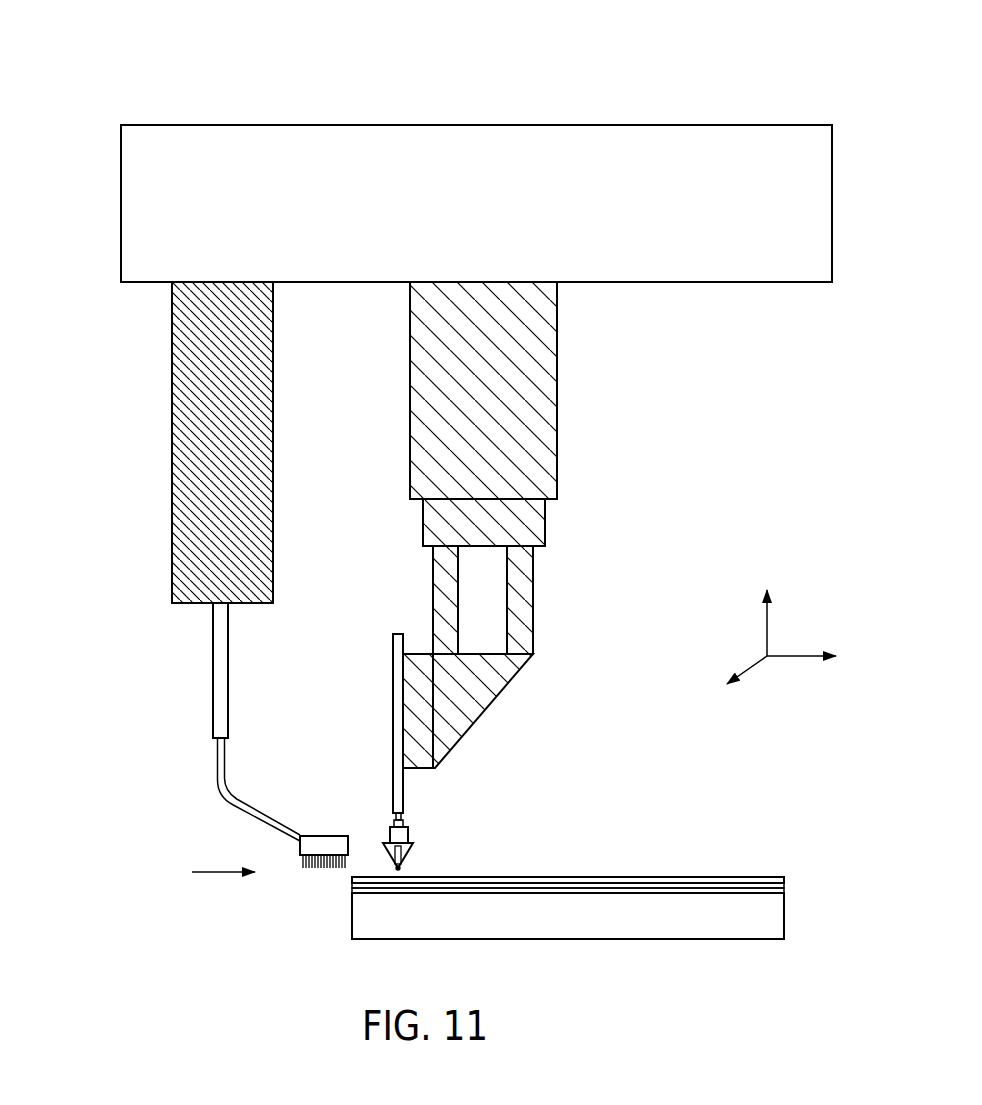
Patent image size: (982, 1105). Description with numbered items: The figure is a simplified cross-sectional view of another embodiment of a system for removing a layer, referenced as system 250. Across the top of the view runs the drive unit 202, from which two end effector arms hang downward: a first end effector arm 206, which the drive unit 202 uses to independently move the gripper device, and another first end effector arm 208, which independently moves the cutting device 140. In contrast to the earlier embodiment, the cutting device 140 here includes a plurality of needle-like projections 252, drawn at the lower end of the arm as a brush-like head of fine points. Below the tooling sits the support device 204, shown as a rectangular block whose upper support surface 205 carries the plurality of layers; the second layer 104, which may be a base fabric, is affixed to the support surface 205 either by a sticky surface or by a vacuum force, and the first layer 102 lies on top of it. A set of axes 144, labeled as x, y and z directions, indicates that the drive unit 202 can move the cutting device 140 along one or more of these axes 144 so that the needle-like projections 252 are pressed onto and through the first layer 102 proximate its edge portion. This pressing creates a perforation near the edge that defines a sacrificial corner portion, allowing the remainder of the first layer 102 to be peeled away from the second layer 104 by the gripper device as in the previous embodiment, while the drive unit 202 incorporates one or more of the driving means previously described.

The system for removing a layer 250 is at (154, 84).
The drive unit 202 is at (712, 282).
The first end effector arm 208 is at (172, 406).
The first end effector arm 206 is at (410, 365).
The cutting device 140 is at (394, 837).
The needle-like projections 252 is at (310, 868).
The first layer 102 is at (657, 888).
The second layer 104 is at (738, 883).
The support surface 205 is at (784, 878).
The support device 204 is at (784, 915).
The axes 144 is at (804, 626).